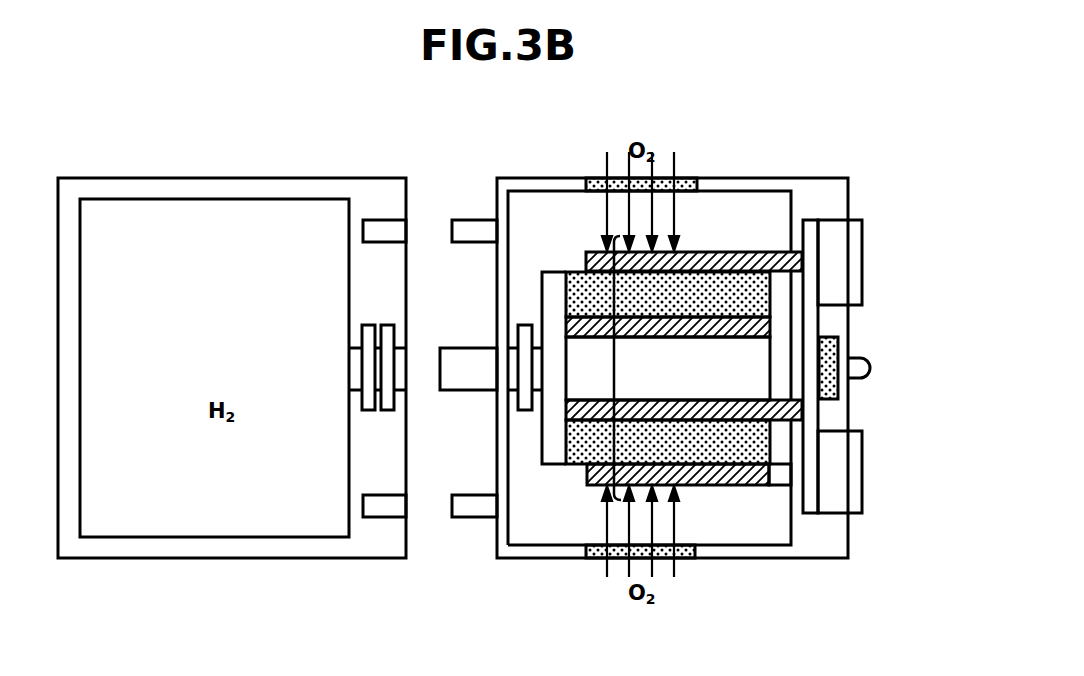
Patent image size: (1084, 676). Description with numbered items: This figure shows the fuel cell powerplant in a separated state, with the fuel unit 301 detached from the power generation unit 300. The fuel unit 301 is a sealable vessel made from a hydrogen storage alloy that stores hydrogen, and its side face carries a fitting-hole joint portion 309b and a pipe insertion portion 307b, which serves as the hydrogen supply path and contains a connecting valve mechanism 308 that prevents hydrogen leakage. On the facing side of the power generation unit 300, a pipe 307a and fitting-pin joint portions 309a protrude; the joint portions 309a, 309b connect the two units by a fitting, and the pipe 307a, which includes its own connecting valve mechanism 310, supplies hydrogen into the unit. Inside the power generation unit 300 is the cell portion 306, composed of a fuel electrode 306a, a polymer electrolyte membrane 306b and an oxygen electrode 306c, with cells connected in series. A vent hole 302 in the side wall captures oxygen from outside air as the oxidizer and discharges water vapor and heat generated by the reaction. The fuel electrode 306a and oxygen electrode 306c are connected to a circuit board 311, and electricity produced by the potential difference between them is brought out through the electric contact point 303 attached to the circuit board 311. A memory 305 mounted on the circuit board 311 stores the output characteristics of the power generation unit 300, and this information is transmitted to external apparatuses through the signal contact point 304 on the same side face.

The power generation unit 300 is at (672, 368).
The fuel unit 301 is at (232, 368).
The vent hole 302 is at (663, 185).
The electric contact point 303 is at (840, 245).
The signal contact point 304 is at (866, 372).
The memory 305 is at (830, 343).
The cell portion 306 is at (612, 372).
The fuel electrode 306a is at (718, 300).
The polymer electrolyte membrane 306b is at (752, 300).
The oxygen electrode 306c is at (697, 262).
The pipe 307a is at (462, 377).
The pipe insertion portion 307b is at (357, 370).
The connecting valve mechanism 308 is at (368, 323).
The joint portion 309a is at (472, 232).
The joint portion 309b is at (383, 230).
The connecting valve mechanism 310 is at (520, 325).
The circuit board 311 is at (810, 224).